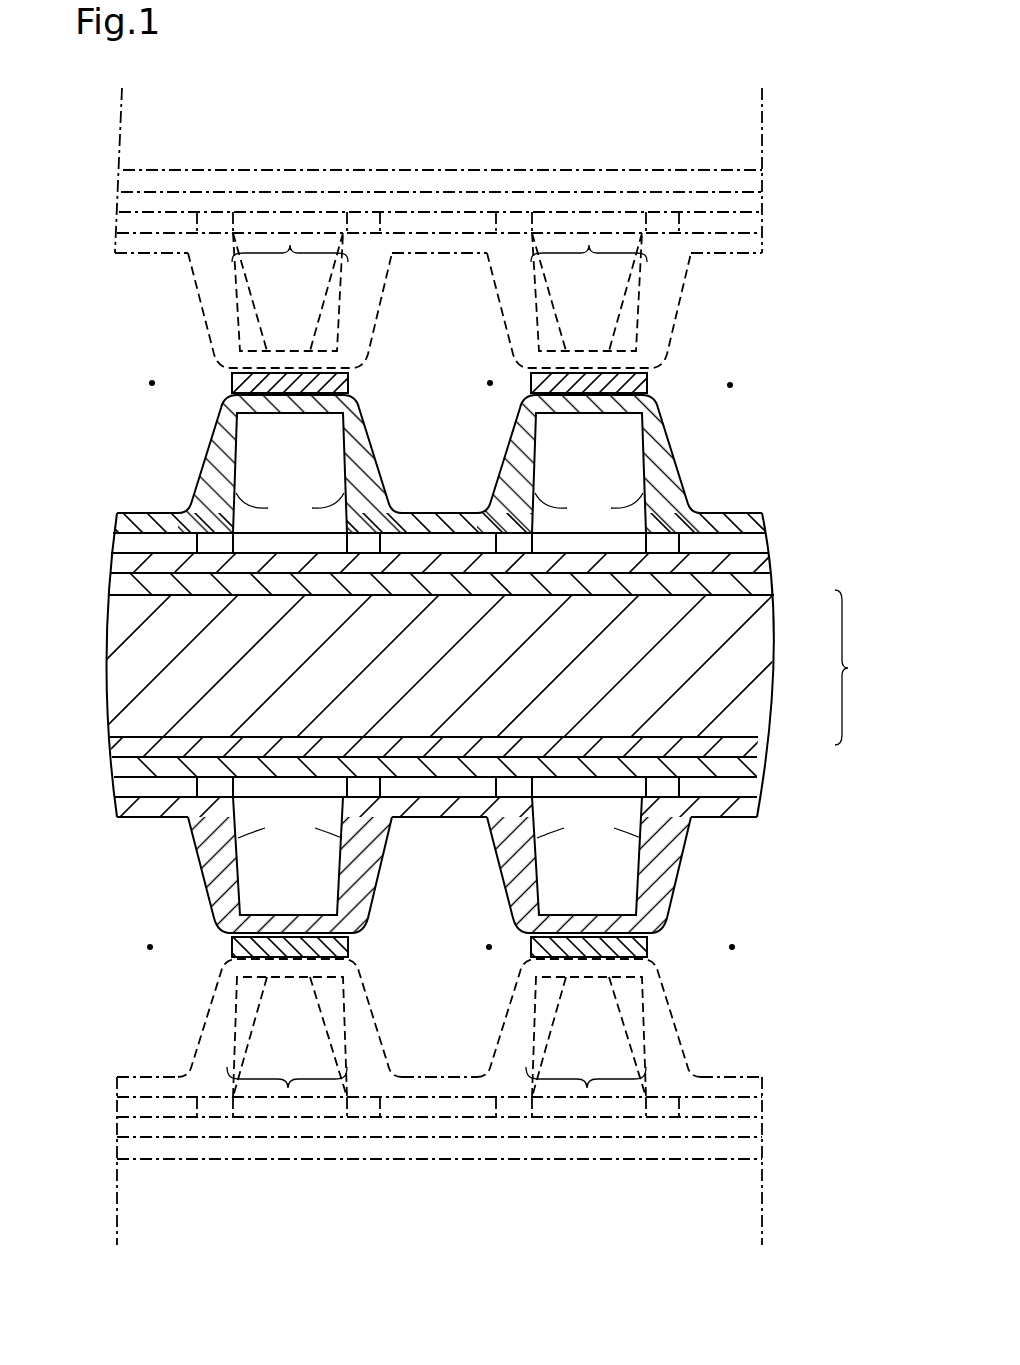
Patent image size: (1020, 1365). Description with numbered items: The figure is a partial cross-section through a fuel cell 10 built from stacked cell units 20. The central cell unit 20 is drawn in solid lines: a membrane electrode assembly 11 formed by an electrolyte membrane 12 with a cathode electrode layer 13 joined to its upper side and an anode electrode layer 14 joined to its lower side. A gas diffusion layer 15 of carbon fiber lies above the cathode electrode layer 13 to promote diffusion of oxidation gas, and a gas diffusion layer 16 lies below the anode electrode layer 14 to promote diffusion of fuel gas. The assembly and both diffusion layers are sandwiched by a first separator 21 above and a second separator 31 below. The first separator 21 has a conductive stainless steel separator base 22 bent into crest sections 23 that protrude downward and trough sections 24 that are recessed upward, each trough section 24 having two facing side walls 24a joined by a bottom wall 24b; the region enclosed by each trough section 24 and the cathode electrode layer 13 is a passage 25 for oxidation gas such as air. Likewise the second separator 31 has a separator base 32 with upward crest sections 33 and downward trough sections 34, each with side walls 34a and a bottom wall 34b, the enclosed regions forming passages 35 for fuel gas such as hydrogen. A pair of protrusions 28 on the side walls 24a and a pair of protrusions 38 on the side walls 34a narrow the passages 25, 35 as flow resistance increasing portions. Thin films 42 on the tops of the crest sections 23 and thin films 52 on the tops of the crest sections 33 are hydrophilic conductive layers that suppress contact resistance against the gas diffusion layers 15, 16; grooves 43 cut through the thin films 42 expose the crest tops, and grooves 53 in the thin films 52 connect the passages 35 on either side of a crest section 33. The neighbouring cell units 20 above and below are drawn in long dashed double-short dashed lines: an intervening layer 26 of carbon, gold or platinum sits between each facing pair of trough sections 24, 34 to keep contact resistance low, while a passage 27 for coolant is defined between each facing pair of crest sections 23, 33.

The fuel cell 10 is at (855, 324).
The membrane electrode assembly 11 is at (856, 667).
The electrolyte membrane 12 is at (762, 137).
The cathode electrode layer 13 is at (772, 587).
The anode electrode layer 14 is at (765, 177).
The gas diffusion layer 15 is at (770, 567).
The gas diffusion layer 16 is at (762, 200).
The cell unit 20 is at (108, 132).
The first separator 21 is at (132, 503).
The separator base 22 is at (764, 520).
The crest section 23 is at (173, 533).
The trough section 24 is at (279, 978).
The side wall 24a is at (340, 535).
The bottom wall 24b is at (439, 473).
The passage 25 is at (303, 426).
The intervening layer 26 is at (348, 385).
The passage 27 is at (152, 383).
The protrusion 28 is at (436, 805).
The second separator 31 is at (134, 268).
The separator base 32 is at (762, 248).
The crest section 33 is at (162, 233).
The trough section 34 is at (283, 351).
The side wall 34a is at (339, 801).
The bottom wall 34b is at (437, 856).
The passage 35 is at (298, 272).
The protrusion 38 is at (439, 528).
The thin film 42 is at (438, 825).
The groove 43 is at (128, 545).
The thin film 52 is at (438, 504).
The groove 53 is at (117, 222).